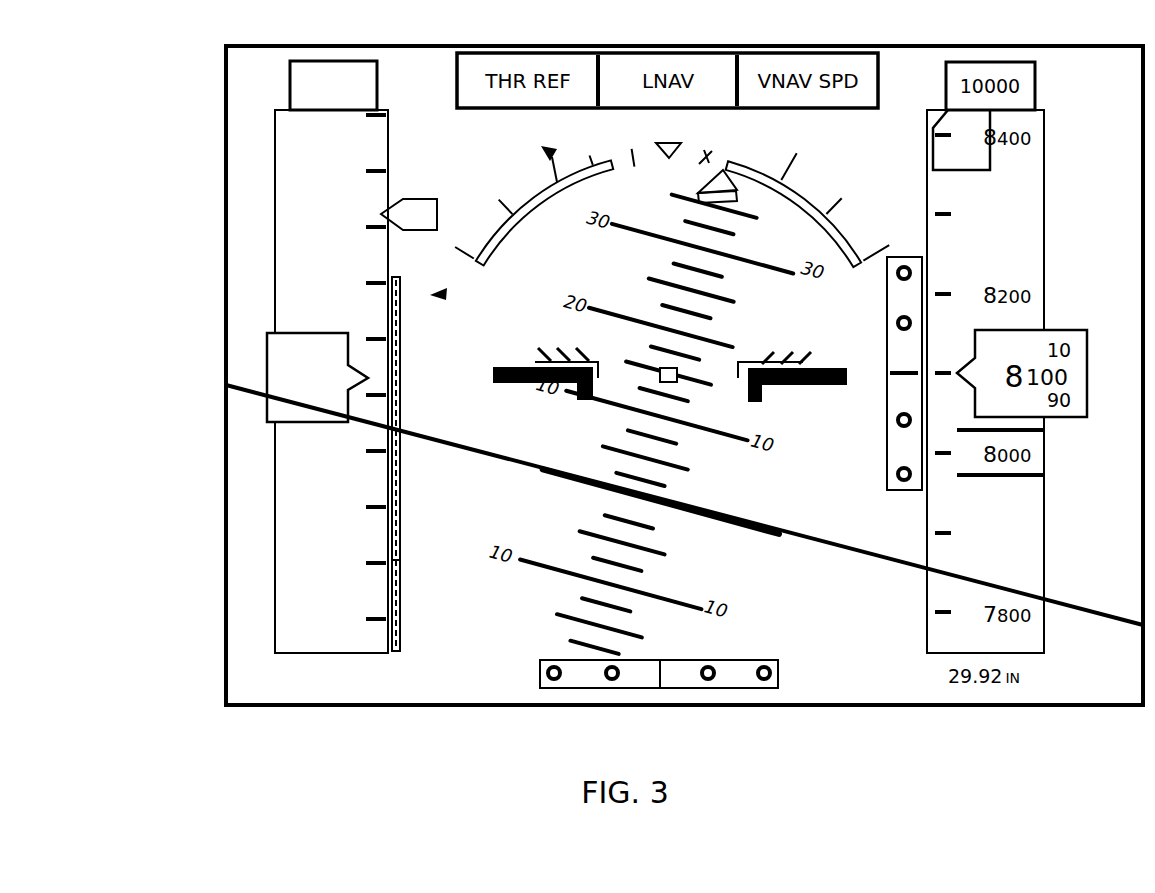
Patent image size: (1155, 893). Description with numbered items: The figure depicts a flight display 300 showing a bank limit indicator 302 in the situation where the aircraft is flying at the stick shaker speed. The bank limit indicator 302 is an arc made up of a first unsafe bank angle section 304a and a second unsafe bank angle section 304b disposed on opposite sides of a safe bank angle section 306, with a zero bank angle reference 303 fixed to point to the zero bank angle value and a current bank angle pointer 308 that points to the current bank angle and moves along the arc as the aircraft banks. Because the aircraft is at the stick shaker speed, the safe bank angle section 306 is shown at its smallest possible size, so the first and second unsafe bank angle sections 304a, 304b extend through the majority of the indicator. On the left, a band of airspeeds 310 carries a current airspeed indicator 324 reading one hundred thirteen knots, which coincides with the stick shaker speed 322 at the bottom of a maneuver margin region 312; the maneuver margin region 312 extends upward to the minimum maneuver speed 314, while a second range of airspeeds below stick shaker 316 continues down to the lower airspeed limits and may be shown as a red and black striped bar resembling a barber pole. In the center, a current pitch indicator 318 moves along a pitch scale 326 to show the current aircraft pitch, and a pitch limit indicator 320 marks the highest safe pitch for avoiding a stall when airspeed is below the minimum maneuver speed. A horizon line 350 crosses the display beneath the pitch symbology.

The flight display 300 is at (625, 30).
The bank limit indicator 302 is at (540, 147).
The zero bank angle reference 303 is at (670, 142).
The first unsafe bank angle section 304a is at (537, 208).
The second unsafe bank angle section 304b is at (840, 226).
The safe bank angle section 306 is at (710, 157).
The current bank angle pointer 308 is at (698, 184).
The band of airspeeds 310 is at (293, 172).
The maneuver margin region 312 is at (446, 294).
The minimum maneuver speed 314 is at (395, 277).
The second range of airspeeds below stick shaker 316 is at (398, 588).
The current pitch indicator 318 is at (818, 386).
The pitch limit indicator 320 is at (772, 356).
The stick shaker speed 322 is at (396, 383).
The current airspeed indicator 324 is at (278, 362).
The pitch scale 326 is at (746, 250).
The horizon line 350 is at (828, 540).